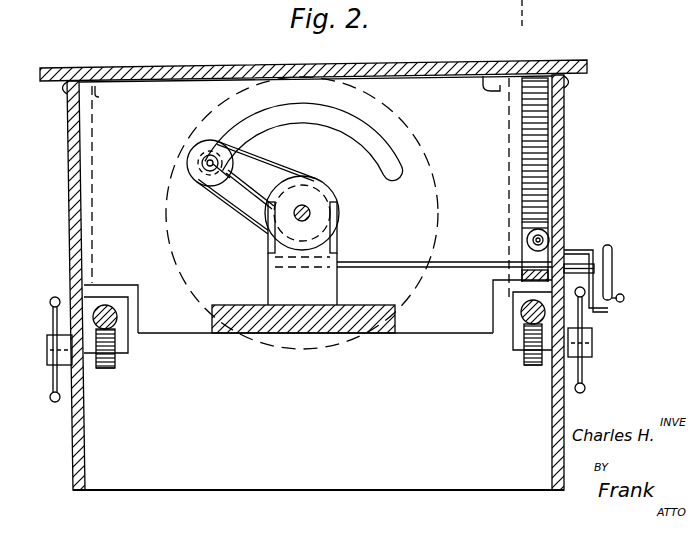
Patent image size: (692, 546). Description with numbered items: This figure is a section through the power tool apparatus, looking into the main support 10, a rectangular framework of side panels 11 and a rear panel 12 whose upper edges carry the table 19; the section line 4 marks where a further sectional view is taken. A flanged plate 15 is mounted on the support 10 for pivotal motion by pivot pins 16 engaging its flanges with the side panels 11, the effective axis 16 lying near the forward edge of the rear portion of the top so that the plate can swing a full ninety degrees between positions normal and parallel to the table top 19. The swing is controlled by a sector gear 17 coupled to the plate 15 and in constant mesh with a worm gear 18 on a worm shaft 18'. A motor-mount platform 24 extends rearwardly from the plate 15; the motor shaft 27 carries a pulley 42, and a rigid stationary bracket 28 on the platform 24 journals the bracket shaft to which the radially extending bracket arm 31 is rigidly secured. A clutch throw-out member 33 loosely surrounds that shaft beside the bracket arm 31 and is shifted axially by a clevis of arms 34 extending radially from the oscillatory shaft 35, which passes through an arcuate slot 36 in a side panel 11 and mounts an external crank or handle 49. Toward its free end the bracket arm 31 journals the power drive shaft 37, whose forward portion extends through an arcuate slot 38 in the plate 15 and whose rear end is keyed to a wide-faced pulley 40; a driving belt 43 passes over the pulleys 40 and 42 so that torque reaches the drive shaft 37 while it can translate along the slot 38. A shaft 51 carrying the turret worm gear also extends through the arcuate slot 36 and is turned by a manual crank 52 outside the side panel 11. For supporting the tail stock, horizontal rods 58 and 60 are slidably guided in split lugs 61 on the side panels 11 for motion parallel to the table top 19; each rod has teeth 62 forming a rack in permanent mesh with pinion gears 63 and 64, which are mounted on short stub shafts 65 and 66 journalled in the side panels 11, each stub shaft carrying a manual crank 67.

The section line 4 is at (533, 14).
The main support 10 is at (612, 196).
The side panels 11 is at (68, 150).
The rear panel 12 is at (304, 249).
The flanged plate 15 is at (455, 322).
The pivot pins 16 is at (487, 76).
The sector gear 17 is at (563, 116).
The worm gear 18 is at (569, 227).
The worm shaft 18' is at (507, 255).
The table 19 is at (164, 16).
The motor-mount platform 24 is at (356, 323).
The motor shaft 27 is at (312, 214).
The stationary bracket 28 is at (325, 288).
The bracket arm 31 is at (258, 168).
The clutch throw-out member 33 is at (311, 184).
The clevis arms 34 is at (268, 258).
The oscillatory shaft 35 is at (405, 269).
The arcuate slot 36 is at (588, 256).
The power drive shaft 37 is at (200, 172).
The arcuate slot 38 is at (395, 133).
The wide-faced pulley 40 is at (216, 186).
The pulley 42 is at (330, 200).
The driving belt 43 is at (248, 222).
The external crank 49 is at (598, 316).
The shaft 51 is at (613, 276).
The manual crank 52 is at (624, 300).
The horizontal rod 58 is at (118, 318).
The horizontal rod 60 is at (530, 330).
The split lugs 61 is at (100, 305).
The teeth 62 is at (112, 333).
The pinion gear 63 is at (112, 365).
The pinion gear 64 is at (540, 370).
The stub shaft 65 is at (88, 357).
The stub shaft 66 is at (566, 352).
The manual crank 67 is at (53, 370).